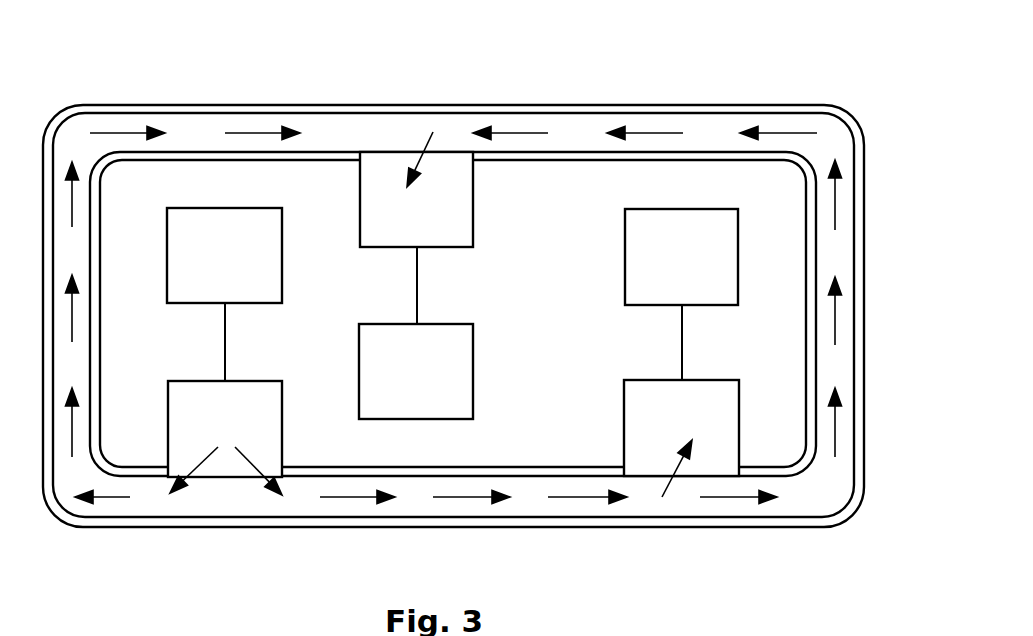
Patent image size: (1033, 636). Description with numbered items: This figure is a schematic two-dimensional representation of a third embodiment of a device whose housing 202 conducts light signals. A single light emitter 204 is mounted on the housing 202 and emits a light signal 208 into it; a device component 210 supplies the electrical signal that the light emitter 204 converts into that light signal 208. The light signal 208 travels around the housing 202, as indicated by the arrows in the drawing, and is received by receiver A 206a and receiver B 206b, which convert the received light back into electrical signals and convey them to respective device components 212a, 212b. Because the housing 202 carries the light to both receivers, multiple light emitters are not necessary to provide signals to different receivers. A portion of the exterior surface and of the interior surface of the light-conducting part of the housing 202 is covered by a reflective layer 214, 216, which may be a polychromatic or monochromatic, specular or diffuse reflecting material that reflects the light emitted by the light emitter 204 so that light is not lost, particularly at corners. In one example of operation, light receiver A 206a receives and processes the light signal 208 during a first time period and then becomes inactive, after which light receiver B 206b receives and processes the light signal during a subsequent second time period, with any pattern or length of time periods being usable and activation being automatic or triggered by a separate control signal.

The housing 202 is at (732, 3).
The light emitter 204 is at (225, 477).
The light receiver A 206a is at (640, 477).
The light receiver B 206b is at (376, 152).
The light signal 208 is at (335, 495).
The device component 210 is at (200, 208).
The device component 212a is at (625, 270).
The device component 212b is at (385, 323).
The reflective layer 214 is at (533, 477).
The reflective layer 216 is at (517, 105).